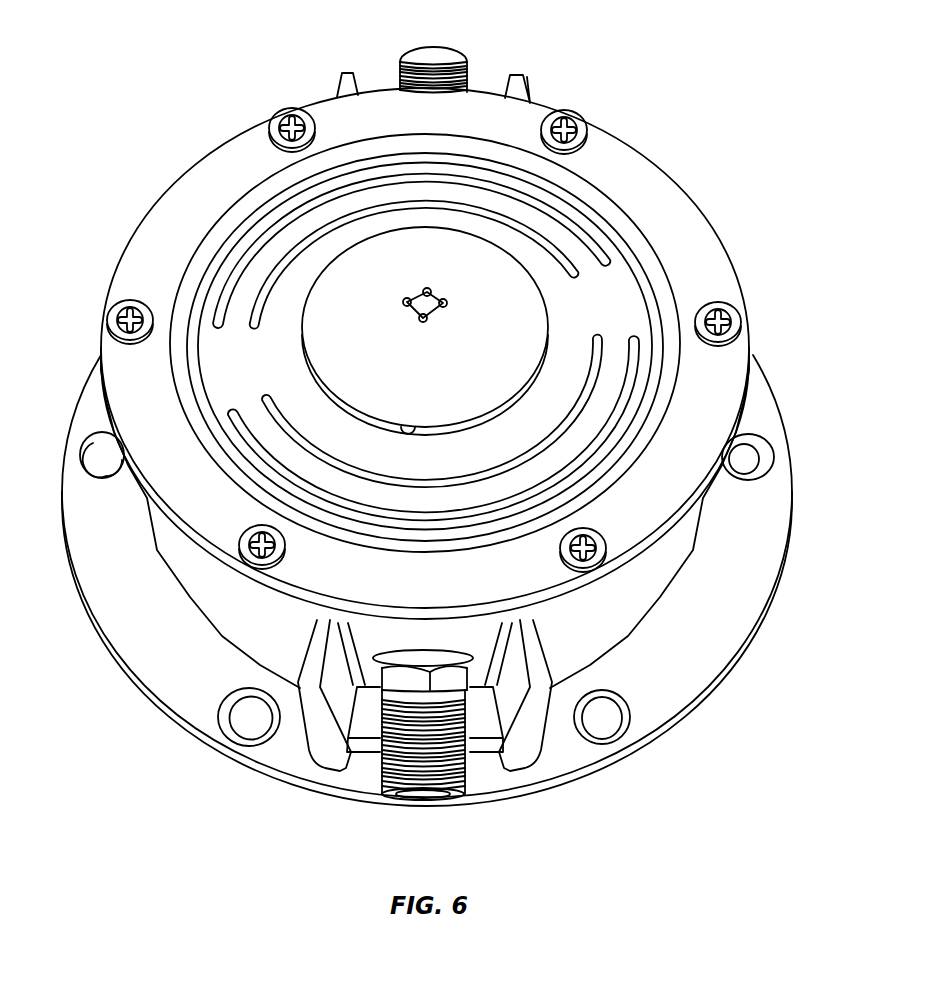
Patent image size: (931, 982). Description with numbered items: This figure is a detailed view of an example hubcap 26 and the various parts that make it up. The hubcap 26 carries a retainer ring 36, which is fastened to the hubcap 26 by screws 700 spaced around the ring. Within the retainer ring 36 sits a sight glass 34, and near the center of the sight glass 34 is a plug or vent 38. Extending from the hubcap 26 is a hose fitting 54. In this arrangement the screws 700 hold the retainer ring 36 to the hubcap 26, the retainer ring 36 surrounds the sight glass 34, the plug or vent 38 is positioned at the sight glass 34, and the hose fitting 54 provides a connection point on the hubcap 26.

The hubcap 26 is at (693, 557).
The sight glass 34 is at (255, 210).
The retainer ring 36 is at (710, 227).
The plug or vent 38 is at (465, 230).
The hose fitting 54 is at (452, 798).
The screws 700 is at (130, 300).